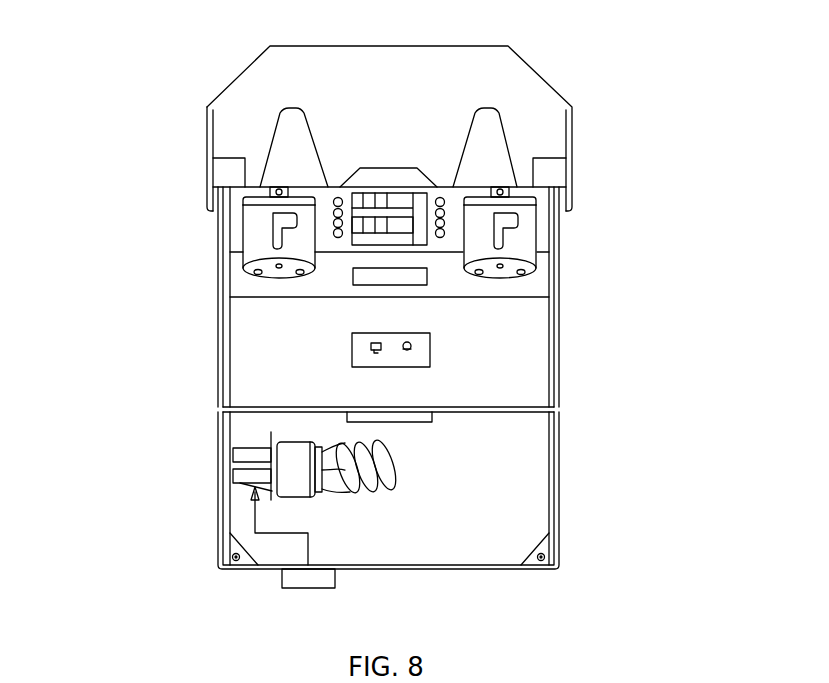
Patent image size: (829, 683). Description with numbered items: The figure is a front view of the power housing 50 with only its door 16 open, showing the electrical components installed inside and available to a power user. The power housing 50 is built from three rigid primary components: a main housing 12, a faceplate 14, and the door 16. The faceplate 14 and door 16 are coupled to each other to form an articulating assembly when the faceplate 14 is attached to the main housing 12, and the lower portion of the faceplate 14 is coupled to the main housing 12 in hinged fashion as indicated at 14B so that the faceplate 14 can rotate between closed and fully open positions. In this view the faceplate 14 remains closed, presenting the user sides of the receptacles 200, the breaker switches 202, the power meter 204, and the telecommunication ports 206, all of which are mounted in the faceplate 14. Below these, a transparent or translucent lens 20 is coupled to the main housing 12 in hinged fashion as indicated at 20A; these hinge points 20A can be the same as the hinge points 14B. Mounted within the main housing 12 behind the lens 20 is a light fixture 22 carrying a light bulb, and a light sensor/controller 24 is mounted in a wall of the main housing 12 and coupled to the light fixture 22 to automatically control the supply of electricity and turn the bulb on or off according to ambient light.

The power housing 50 is at (632, 122).
The door 16 is at (328, 46).
The faceplate 14 is at (540, 373).
The receptacles 200 is at (252, 236).
The breaker switches 202 is at (367, 209).
The power meter 204 is at (428, 278).
The telecommunication ports 206 is at (431, 350).
The hinge 14B is at (222, 409).
The hinge points 20A is at (223, 417).
The main housing 12 is at (559, 497).
The lens 20 is at (508, 528).
The light fixture 22 is at (247, 443).
The light sensor/controller 24 is at (313, 588).